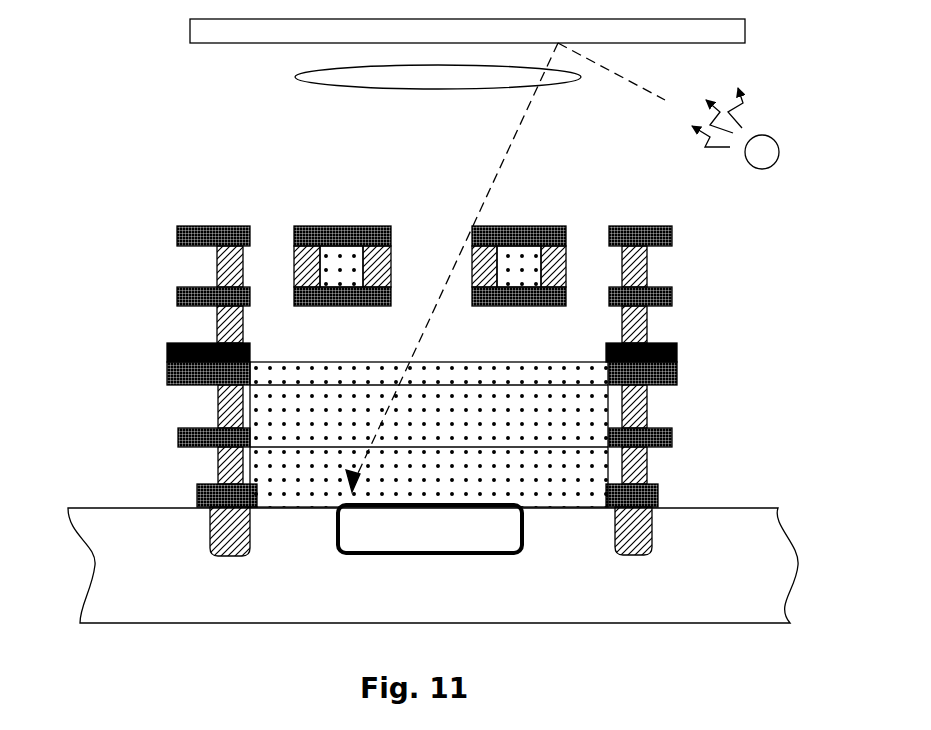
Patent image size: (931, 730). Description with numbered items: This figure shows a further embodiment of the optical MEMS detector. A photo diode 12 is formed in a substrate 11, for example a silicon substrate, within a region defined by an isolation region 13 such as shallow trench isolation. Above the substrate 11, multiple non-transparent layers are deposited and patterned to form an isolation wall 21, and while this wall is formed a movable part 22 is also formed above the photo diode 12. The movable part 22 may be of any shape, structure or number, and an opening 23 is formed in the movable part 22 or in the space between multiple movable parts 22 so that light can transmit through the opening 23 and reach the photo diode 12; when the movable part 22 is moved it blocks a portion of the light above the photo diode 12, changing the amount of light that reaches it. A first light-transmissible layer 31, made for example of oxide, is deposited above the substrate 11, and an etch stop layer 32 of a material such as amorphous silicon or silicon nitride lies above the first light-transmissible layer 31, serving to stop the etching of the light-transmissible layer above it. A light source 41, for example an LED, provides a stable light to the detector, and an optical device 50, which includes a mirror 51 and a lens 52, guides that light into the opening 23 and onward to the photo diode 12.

The substrate 11 is at (433, 565).
The photo diode 12 is at (430, 529).
The isolation region 13 is at (632, 533).
The isolation wall 21 is at (415, 333).
The movable part 22 is at (313, 226).
The opening 23 is at (416, 243).
The first light-transmissible layer 31 is at (285, 418).
The etch stop layer 32 is at (167, 352).
The light source 41 is at (779, 153).
The optical device 50 is at (141, 20).
The mirror 51 is at (735, 33).
The lens 52 is at (295, 78).